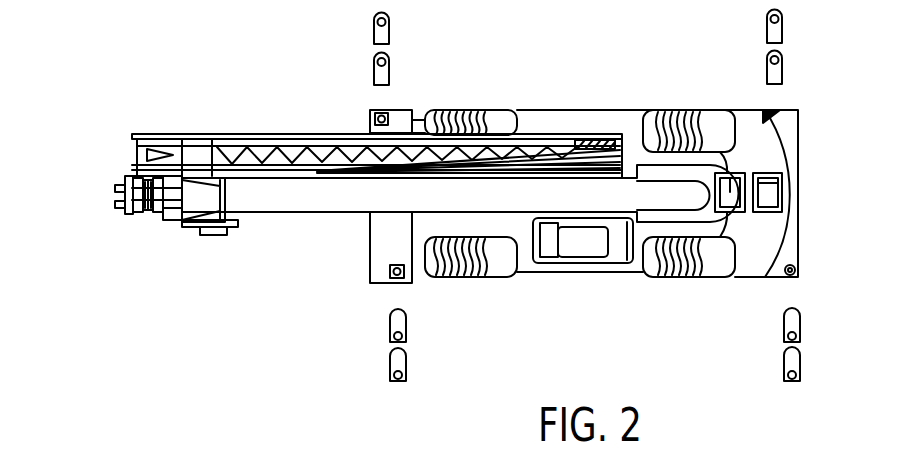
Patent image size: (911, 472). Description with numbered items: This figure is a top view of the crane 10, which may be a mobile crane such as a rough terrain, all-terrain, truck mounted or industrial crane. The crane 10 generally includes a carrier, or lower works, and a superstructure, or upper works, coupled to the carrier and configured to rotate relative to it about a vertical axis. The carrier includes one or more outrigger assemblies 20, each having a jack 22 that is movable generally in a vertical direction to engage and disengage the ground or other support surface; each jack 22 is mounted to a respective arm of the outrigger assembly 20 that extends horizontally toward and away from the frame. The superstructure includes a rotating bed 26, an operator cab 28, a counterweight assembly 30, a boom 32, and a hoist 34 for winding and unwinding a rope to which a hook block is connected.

The crane 10 is at (816, 121).
The outrigger assembly 20 is at (396, 109).
The jack 22 is at (380, 77).
The rotating bed 26 is at (635, 135).
The operator cab 28 is at (592, 258).
The counterweight assembly 30 is at (777, 237).
The boom 32 is at (295, 206).
The hoist 34 is at (726, 173).